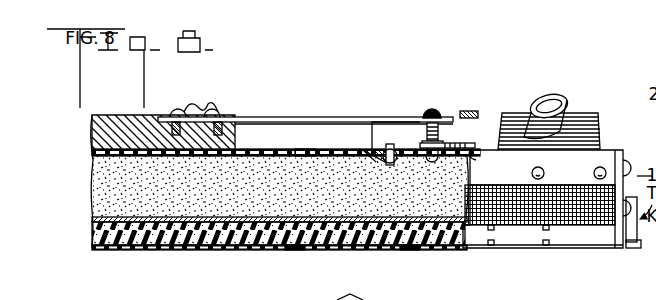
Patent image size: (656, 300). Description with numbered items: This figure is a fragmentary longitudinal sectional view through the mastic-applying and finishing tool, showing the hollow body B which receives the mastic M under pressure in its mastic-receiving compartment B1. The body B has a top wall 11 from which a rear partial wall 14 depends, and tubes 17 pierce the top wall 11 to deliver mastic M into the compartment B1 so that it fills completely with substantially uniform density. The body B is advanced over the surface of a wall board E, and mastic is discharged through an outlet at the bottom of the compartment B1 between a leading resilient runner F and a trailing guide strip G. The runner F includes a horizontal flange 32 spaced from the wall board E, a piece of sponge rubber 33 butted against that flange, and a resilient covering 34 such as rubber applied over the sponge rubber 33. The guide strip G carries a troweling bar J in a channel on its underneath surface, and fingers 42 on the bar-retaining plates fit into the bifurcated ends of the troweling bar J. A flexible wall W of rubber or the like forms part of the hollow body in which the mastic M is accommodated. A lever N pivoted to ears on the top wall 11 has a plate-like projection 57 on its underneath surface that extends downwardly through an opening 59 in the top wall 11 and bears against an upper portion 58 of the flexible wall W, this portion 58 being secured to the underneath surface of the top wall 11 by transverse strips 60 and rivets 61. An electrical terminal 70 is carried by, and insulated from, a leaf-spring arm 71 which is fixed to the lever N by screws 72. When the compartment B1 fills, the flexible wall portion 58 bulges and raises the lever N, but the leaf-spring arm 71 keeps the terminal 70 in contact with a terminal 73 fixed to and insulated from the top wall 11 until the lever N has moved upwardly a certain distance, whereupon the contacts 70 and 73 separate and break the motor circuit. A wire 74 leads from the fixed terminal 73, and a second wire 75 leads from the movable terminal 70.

The lever N is at (90, 133).
The flexible wall W is at (90, 155).
The mastic M is at (108, 175).
The mastic-receiving compartment B1 is at (108, 196).
The wall board E is at (76, 246).
The sponge rubber 33 is at (156, 245).
The resilient runner F is at (232, 247).
The horizontal flange 32 is at (296, 246).
The resilient covering 34 is at (412, 247).
The troweling bar J is at (517, 249).
The guide strip G is at (594, 233).
The fingers 42 is at (622, 248).
The rear partial wall 14 is at (557, 179).
The hollow body B is at (610, 147).
The tubes 17 is at (561, 108).
The electrical terminal 70 is at (433, 110).
The wire 75 is at (476, 111).
The terminal 73 is at (443, 137).
The wire 74 is at (487, 164).
The top wall 11 is at (410, 128).
The opening 59 is at (372, 150).
The transverse strips 60 is at (383, 160).
The rivets 61 is at (407, 162).
The plate-like projection 57 is at (238, 137).
The upper portion of flexible wall 58 is at (303, 156).
The leaf-spring arm 71 is at (277, 116).
The screws 72 is at (196, 109).